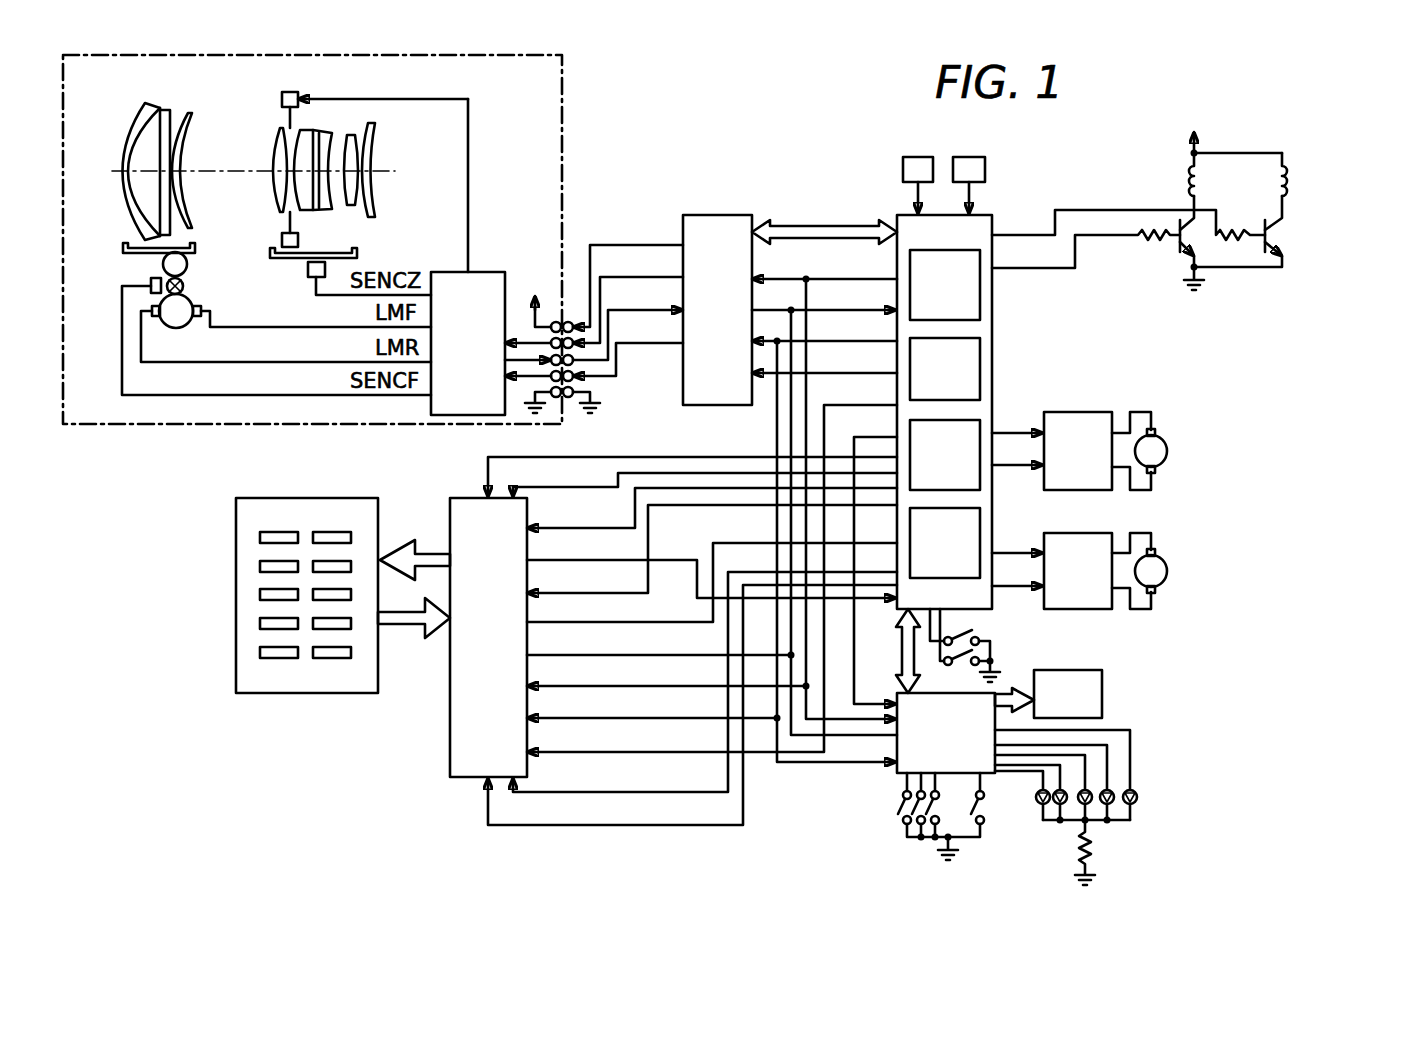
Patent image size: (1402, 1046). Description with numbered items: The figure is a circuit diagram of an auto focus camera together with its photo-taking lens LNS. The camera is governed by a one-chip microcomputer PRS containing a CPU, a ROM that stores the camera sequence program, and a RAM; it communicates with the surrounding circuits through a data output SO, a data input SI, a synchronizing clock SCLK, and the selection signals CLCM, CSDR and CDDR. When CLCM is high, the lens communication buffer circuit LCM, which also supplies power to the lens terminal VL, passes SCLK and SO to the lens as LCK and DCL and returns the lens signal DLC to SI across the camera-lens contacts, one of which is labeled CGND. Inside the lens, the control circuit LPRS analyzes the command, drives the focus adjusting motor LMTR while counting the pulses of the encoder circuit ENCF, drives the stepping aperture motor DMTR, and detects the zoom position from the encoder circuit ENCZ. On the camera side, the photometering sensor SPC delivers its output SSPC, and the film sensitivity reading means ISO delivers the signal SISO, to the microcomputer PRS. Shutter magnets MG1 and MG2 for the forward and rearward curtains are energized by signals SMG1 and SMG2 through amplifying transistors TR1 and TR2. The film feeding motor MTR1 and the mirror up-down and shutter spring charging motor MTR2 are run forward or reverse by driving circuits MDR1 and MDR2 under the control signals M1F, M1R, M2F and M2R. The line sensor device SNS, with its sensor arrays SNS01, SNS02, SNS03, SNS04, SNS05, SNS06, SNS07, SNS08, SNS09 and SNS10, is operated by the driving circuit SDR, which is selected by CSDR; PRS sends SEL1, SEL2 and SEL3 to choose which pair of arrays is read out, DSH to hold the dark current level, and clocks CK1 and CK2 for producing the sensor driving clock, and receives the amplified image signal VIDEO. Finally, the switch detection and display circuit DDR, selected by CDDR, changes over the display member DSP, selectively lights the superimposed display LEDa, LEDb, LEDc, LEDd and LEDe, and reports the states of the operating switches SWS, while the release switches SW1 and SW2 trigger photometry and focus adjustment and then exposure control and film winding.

The photo-taking lens LNS is at (568, 158).
The stepping motor DMTR is at (298, 92).
The zoom encoder circuit ENCZ is at (358, 258).
The focus encoder circuit ENCF is at (148, 284).
The focus adjusting motor LMTR is at (192, 298).
The lens control circuit LPRS is at (468, 343).
The lens power source terminal VL is at (609, 273).
The camera-to-lens data signal DCL is at (594, 297).
The lens-to-camera data signal DLC is at (594, 321).
The lens clock signal LCK is at (594, 346).
The common ground CGND is at (594, 407).
The lens communication buffer circuit LCM is at (717, 310).
The camera control microcomputer PRS is at (981, 412).
The central processing unit CPU is at (945, 285).
The element ROM is at (945, 369).
The element RAM is at (945, 455).
The photometering sensor SPC is at (902, 168).
The photometering sensor output SSPC is at (916, 196).
The film sensitivity reading means ISO is at (986, 165).
The film sensitivity signal SISO is at (972, 196).
The first magnet drive signal SMG1 is at (1128, 224).
The second magnet drive signal SMG2 is at (1086, 249).
The forward curtain magnet MG1 is at (1288, 176).
The rearward curtain magnet MG2 is at (1200, 196).
The amplifying transistor TR1 is at (1284, 224).
The amplifying transistor TR2 is at (1196, 250).
The motor driving circuit MDR1 is at (1078, 451).
The motor driving circuit MDR2 is at (1078, 571).
The film feeding motor MTR1 is at (1168, 451).
The mirror up-down and shutter spring charging motor MTR2 is at (1168, 571).
The motor controlling signal M1F is at (1017, 420).
The motor controlling signal M1R is at (1017, 452).
The motor controlling signal M2F is at (1017, 540).
The motor controlling signal M2R is at (1017, 573).
The data output signal SO is at (712, 486).
The data input signal SI is at (712, 510).
The synchronizing clock SCLK is at (712, 539).
The lens communication selection signal CLCM is at (824, 360).
The sensor driver selection signal CSDR is at (712, 565).
The display circuit selection signal CDDR is at (863, 557).
The sensor pair selection signal SEL1 is at (712, 508).
The sensor pair selection signal SEL2 is at (705, 480).
The sensor pair selection signal SEL3 is at (692, 464).
The dark current hold signal DSH is at (712, 549).
The image signal output VIDEO is at (711, 566).
The sensor clock CK1 is at (705, 682).
The sensor clock CK2 is at (692, 705).
The sensor driving circuit SDR is at (488, 637).
The line sensor device SNS is at (378, 528).
The sensor array SNS01 is at (278, 532).
The sensor array SNS02 is at (334, 532).
The sensor array 03 SNS03 is at (262, 566).
The sensor array 04 SNS04 is at (315, 562).
The sensor array 05 SNS05 is at (262, 594).
The sensor array 06 SNS06 is at (318, 596).
The sensor array 07 SNS07 is at (268, 652).
The sensor array 08 SNS08 is at (345, 630).
The sensor array SNS09 is at (276, 660).
The sensor array SNS10 is at (338, 660).
The first release switch SW1 is at (982, 630).
The second release switch SW2 is at (968, 676).
The switch detection and display circuit DDR is at (946, 733).
The display member DSP is at (1048, 694).
The switch group SWS is at (990, 806).
The superimposed display LED LEDa is at (1040, 806).
The superimposed display LED LEDb is at (1056, 806).
The superimposed display LED LEDc is at (1090, 806).
The superimposed display LED LEDd is at (1110, 806).
The superimposed display LED LEDe is at (1138, 806).